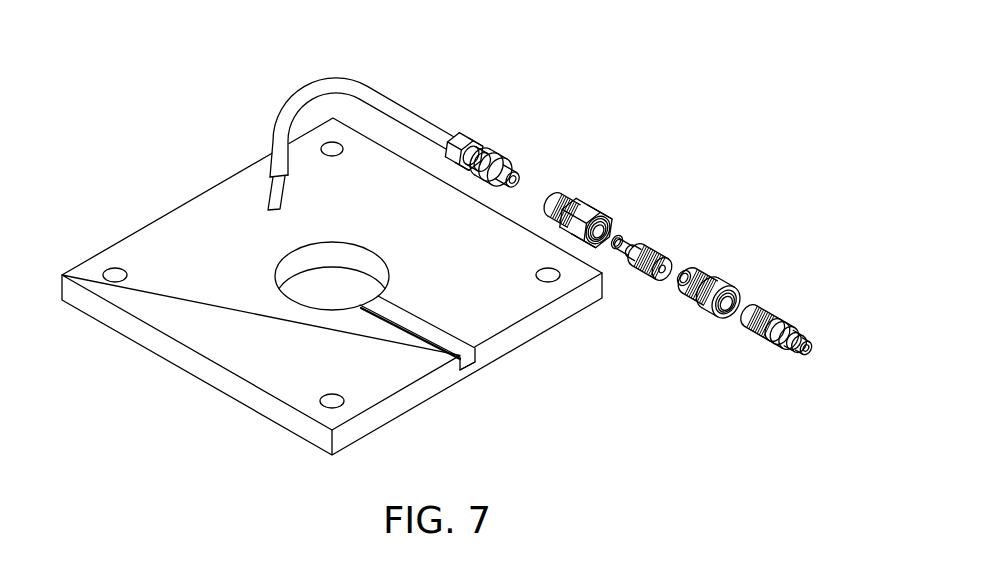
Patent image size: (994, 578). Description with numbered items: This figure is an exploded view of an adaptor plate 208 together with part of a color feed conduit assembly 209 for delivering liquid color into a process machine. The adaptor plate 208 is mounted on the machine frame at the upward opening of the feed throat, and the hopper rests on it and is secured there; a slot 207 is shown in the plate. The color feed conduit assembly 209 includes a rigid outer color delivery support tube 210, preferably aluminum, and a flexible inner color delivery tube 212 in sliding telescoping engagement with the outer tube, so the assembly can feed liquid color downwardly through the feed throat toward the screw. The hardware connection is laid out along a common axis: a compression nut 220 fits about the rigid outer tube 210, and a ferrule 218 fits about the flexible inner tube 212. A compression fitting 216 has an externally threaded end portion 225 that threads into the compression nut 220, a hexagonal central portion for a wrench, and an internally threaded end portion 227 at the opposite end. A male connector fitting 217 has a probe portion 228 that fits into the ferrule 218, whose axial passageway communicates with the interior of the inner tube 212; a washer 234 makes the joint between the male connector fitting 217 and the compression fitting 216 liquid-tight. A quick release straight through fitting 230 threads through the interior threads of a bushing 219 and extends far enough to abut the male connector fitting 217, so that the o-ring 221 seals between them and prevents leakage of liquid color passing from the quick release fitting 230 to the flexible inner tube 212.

The slot 207 is at (478, 356).
The adaptor plate 208 is at (173, 325).
The color feed conduit assembly 209 is at (640, 213).
The rigid outer color delivery support tube 210 is at (309, 106).
The flexible inner color delivery tube 212 is at (277, 192).
The compression fitting 216 is at (605, 191).
The male connector fitting 217 is at (636, 291).
The ferrule 218 is at (498, 157).
The bushing 219 is at (725, 283).
The compression nut 220 is at (465, 137).
The o-ring 221 is at (682, 270).
The end portion 225 is at (560, 208).
The internally threaded end portion 227 is at (596, 193).
The probe portion 228 is at (643, 277).
The quick release straight through fitting 230 is at (775, 348).
The washer 234 is at (620, 234).